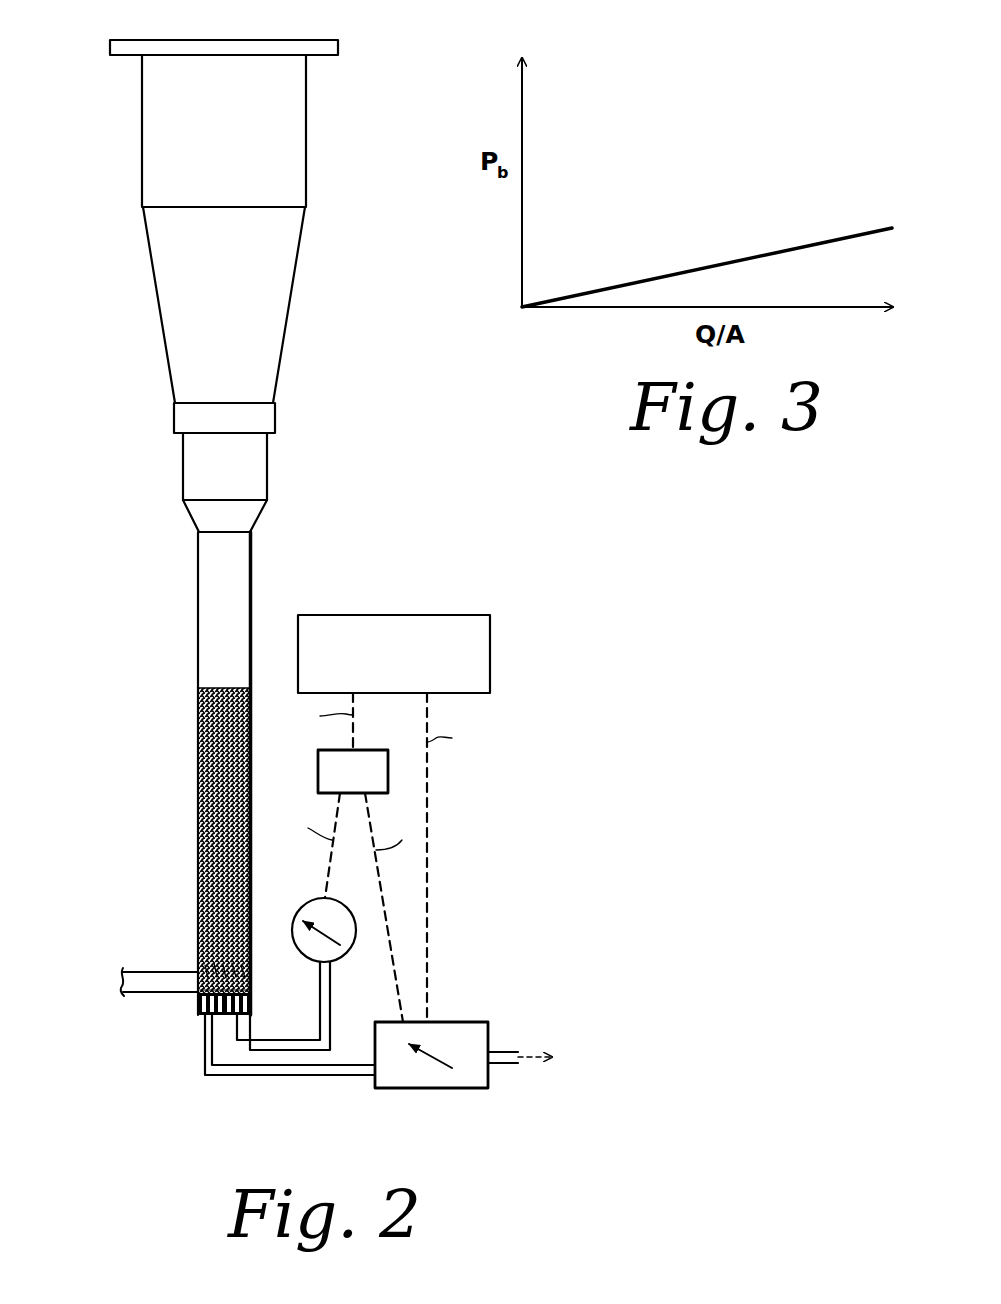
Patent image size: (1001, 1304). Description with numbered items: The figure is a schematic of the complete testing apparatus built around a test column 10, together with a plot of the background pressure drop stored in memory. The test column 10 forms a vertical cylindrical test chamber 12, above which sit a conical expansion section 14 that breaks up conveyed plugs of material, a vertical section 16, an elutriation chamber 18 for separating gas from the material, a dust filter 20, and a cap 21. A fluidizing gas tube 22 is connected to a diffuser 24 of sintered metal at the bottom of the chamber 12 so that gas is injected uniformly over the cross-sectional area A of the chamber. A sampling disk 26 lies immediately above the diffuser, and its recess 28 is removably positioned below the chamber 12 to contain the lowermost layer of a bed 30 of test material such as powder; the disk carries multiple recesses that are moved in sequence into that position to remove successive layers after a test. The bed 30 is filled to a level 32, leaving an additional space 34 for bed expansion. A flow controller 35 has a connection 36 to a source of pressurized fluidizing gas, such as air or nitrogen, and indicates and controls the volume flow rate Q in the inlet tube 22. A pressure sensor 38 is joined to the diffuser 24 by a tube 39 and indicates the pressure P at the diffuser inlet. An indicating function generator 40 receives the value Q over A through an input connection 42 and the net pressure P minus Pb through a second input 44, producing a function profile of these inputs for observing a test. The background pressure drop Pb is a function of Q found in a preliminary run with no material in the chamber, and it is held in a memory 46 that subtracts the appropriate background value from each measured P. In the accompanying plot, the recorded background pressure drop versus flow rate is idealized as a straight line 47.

In FIG. 2, the test column 10 is at (318, 480).
In FIG. 2, the test chamber 12 is at (251, 572).
In FIG. 2, the conical expansion section 14 is at (205, 516).
In FIG. 2, the vertical section 16 is at (200, 463).
In FIG. 2, the elutriation chamber 18 is at (185, 310).
In FIG. 2, the dust filter 20 is at (165, 142).
In FIG. 2, the cap 21 is at (110, 47).
In FIG. 2, the fluidizing gas tube 22 is at (205, 1058).
In FIG. 2, the diffuser 24 is at (199, 1003).
In FIG. 2, the sampling disk 26 is at (145, 972).
In FIG. 2, the recess 28 is at (218, 955).
In FIG. 2, the bed 30 is at (215, 795).
In FIG. 2, the level 32 is at (218, 688).
In FIG. 2, the additional space 34 is at (224, 536).
In FIG. 2, the flow controller 35 is at (488, 1022).
In FIG. 2, the connection 36 is at (505, 1063).
In FIG. 2, the pressure sensor 38 is at (306, 908).
In FIG. 2, the tube 39 is at (282, 1040).
In FIG. 2, the indicating function generator 40 is at (380, 670).
In FIG. 2, the input connection 42 is at (427, 790).
In FIG. 2, the second input 44 is at (353, 725).
In FIG. 2, the memory 46 is at (318, 770).
In FIG. 3, the straight line 47 is at (746, 258).